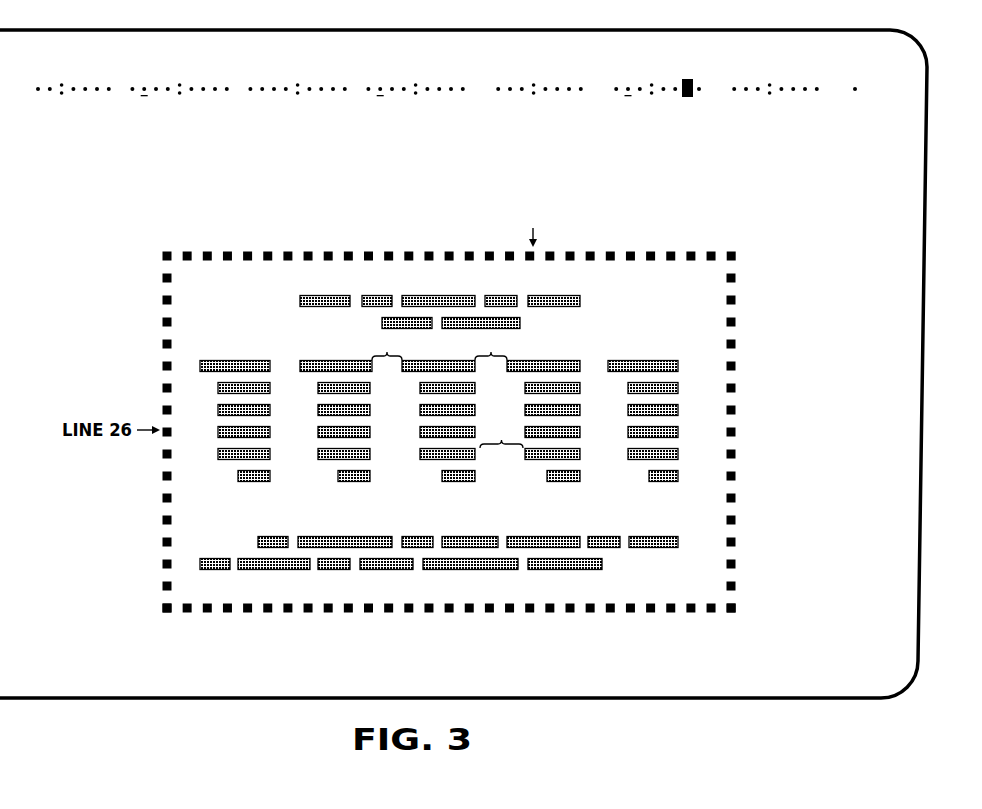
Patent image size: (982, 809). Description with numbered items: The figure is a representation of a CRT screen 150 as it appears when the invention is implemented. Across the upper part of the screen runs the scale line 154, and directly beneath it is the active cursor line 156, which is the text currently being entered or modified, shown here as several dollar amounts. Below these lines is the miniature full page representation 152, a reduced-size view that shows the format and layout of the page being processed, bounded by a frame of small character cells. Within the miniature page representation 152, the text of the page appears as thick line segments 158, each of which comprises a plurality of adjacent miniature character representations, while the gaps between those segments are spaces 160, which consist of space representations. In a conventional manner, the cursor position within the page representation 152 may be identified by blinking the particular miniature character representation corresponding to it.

The CRT screen 150 is at (924, 300).
The miniature full page representation 152 is at (737, 278).
The scale line 154 is at (866, 80).
The active cursor line 156 is at (798, 123).
The thick line segments 158 is at (580, 300).
The spaces 160 is at (408, 642).